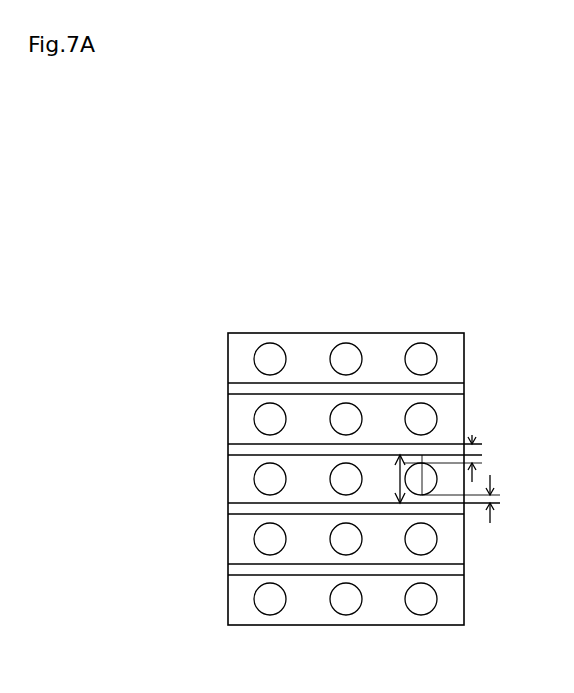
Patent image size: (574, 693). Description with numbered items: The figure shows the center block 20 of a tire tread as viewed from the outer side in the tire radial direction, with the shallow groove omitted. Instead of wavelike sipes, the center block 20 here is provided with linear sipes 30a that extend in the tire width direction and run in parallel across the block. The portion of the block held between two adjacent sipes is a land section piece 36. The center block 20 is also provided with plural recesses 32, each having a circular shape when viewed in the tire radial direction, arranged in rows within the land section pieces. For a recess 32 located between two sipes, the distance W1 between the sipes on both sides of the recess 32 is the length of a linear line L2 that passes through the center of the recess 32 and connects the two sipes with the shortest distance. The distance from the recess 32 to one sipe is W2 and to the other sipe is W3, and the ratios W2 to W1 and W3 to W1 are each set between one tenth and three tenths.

The center block 20 is at (373, 340).
The linear sipe 30a is at (257, 392).
The land section piece 36 is at (240, 484).
The recess 32 is at (254, 542).
The distance between the sipes on both sides of the recess W1 is at (385, 479).
The distance between the recess and one sipe W2 is at (459, 458).
The distance between the recess and the other sipe W3 is at (476, 499).
The linear line L2 is at (421, 470).